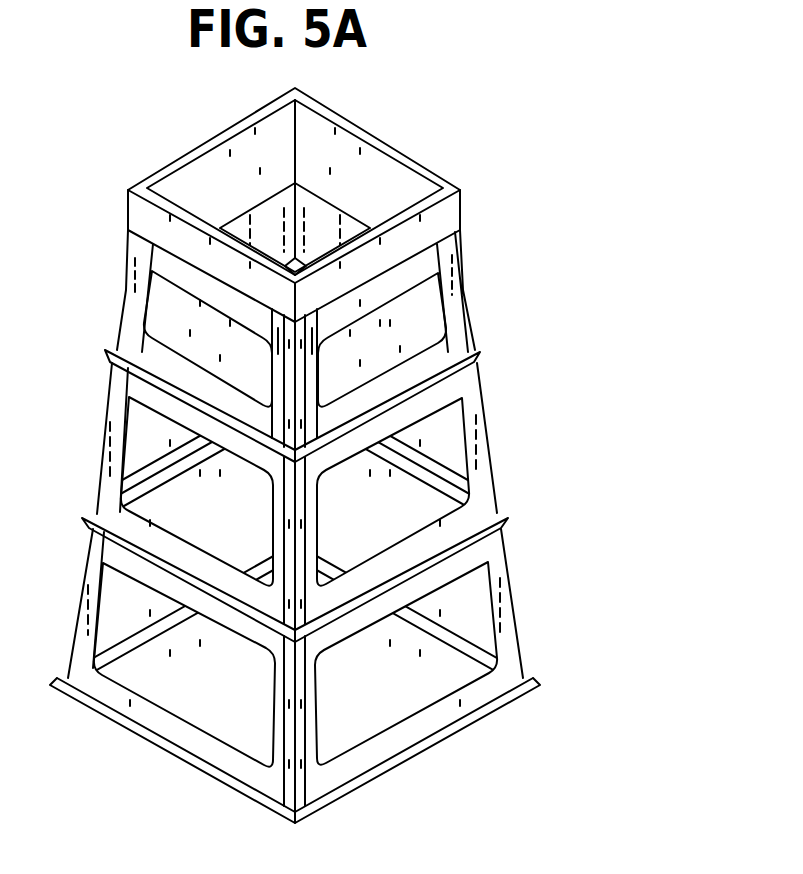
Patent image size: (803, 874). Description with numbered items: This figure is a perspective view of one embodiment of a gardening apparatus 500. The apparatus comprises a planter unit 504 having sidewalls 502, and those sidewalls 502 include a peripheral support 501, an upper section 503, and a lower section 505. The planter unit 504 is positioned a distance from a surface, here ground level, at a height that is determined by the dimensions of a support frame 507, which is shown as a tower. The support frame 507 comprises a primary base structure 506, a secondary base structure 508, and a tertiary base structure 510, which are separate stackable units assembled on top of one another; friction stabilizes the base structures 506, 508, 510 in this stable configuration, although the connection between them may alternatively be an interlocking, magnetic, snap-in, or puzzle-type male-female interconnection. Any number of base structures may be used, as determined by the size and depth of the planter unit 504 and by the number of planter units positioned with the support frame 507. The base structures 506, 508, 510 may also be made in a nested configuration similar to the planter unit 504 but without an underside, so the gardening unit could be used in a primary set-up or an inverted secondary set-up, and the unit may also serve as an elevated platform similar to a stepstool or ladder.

The gardening apparatus 500 is at (432, 139).
The peripheral support 501 is at (138, 214).
The sidewalls 502 is at (466, 232).
The upper section 503 is at (392, 283).
The planter unit 504 is at (563, 338).
The lower section 505 is at (340, 354).
The primary base structure 506 is at (135, 341).
The support frame 507 is at (630, 165).
The secondary base structure 508 is at (108, 418).
The tertiary base structure 510 is at (243, 773).